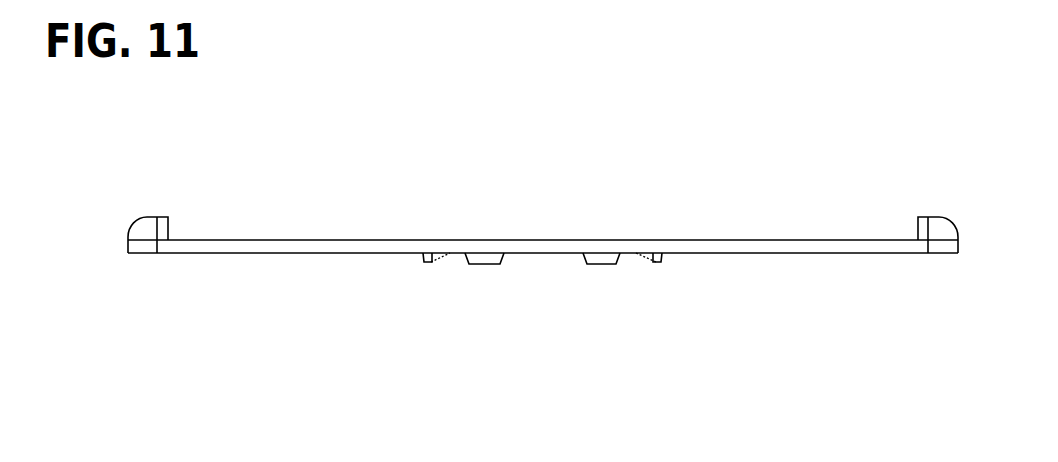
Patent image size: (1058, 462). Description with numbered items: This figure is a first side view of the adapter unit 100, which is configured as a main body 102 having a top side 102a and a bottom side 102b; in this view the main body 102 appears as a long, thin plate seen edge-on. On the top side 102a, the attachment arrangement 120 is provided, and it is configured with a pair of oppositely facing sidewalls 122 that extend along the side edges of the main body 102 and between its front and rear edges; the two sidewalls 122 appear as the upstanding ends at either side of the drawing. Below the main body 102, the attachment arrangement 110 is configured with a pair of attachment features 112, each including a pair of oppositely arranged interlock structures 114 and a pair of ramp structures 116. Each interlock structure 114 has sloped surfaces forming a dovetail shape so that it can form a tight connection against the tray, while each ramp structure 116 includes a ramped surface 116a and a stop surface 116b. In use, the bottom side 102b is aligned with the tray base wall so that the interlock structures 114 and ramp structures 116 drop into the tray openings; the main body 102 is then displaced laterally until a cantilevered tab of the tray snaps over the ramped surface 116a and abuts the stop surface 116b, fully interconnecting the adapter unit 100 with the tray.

The adapter unit 100 is at (125, 172).
The main body 102 is at (178, 256).
The top side 102a is at (790, 241).
The bottom side 102b is at (800, 252).
The attachment arrangement 110 is at (387, 335).
The attachment feature 112 is at (405, 260).
The interlock structure 114 is at (483, 265).
The ramp structure 116 is at (427, 255).
The ramped surface 116a is at (436, 258).
The stop surface 116b is at (425, 254).
The attachment arrangement 120 is at (198, 198).
The sidewall 122 is at (150, 225).